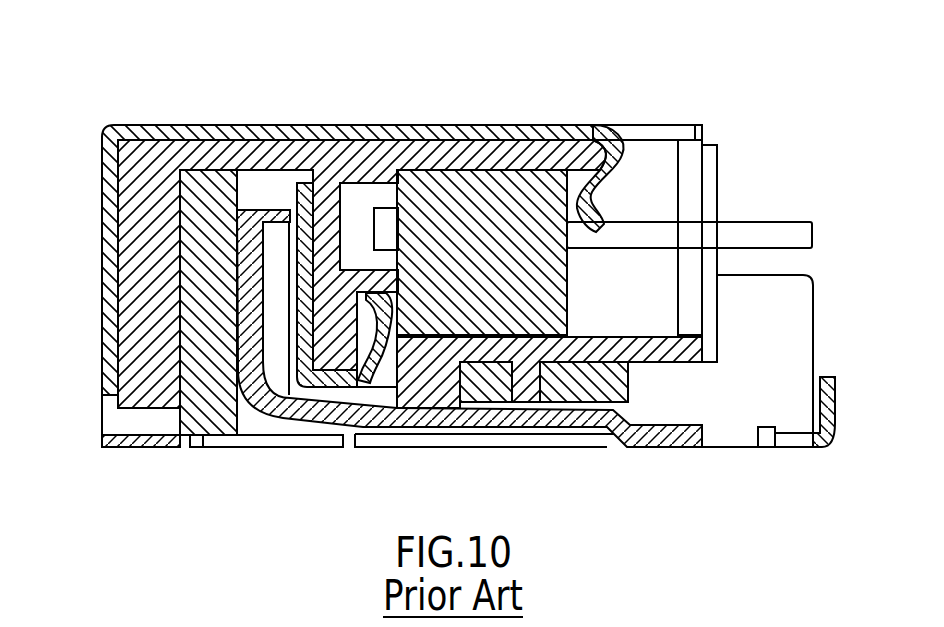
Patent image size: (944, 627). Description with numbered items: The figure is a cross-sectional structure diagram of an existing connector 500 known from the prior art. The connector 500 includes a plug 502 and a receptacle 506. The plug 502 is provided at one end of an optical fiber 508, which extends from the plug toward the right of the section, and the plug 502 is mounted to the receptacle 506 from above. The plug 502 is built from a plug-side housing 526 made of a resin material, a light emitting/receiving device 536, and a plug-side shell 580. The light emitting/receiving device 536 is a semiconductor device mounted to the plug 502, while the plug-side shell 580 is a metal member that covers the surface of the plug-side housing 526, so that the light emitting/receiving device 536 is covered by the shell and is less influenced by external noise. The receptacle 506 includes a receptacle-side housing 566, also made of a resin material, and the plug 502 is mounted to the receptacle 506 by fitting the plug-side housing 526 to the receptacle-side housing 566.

The connector 500 is at (82, 32).
The plug 502 is at (672, 133).
The receptacle 506 is at (133, 447).
The optical fiber 508 is at (790, 222).
The plug-side housing 526 is at (148, 150).
The light emitting/receiving device 536 is at (387, 215).
The receptacle-side housing 566 is at (203, 448).
The plug-side shell 580 is at (548, 130).